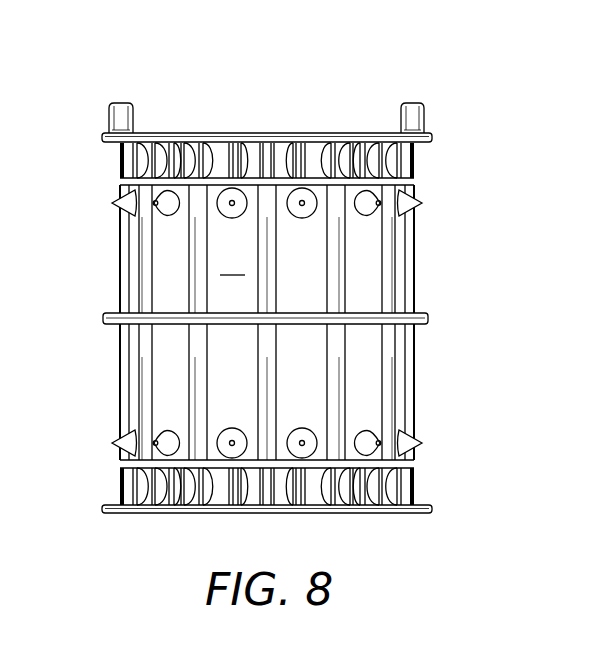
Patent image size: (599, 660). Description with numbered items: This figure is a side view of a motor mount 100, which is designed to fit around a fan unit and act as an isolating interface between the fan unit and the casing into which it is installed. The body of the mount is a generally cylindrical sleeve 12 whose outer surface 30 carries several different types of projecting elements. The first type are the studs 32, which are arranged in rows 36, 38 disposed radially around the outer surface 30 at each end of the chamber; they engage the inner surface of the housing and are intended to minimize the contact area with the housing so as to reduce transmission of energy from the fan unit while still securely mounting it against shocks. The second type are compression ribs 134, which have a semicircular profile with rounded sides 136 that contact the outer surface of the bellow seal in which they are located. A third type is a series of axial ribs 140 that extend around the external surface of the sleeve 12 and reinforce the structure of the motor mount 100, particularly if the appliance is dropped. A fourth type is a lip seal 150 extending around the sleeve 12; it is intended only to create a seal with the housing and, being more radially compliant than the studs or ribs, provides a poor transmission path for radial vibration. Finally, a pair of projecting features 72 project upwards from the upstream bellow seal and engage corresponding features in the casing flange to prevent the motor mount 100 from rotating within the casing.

The motor mount 100 is at (137, 74).
The projecting features 72 is at (412, 102).
The sleeve 12 is at (425, 379).
The lip seal 150 is at (413, 320).
The compression ribs 134 is at (390, 157).
The rounded sides 136 is at (192, 505).
The outer surface 30 is at (267, 322).
The axial ribs 140 is at (390, 260).
The row of projecting elements 36 is at (428, 187).
The studs 32 is at (112, 203).
The row of projecting elements 38 is at (428, 428).